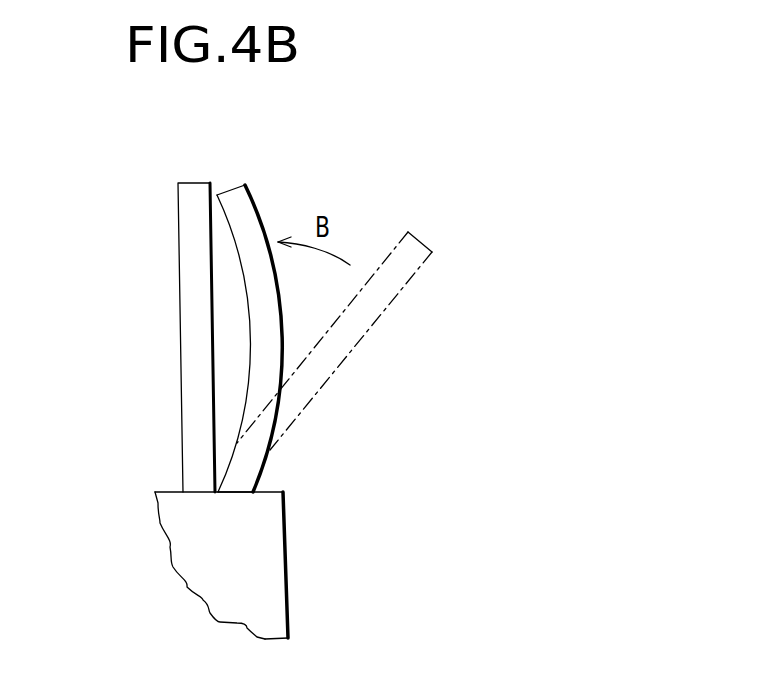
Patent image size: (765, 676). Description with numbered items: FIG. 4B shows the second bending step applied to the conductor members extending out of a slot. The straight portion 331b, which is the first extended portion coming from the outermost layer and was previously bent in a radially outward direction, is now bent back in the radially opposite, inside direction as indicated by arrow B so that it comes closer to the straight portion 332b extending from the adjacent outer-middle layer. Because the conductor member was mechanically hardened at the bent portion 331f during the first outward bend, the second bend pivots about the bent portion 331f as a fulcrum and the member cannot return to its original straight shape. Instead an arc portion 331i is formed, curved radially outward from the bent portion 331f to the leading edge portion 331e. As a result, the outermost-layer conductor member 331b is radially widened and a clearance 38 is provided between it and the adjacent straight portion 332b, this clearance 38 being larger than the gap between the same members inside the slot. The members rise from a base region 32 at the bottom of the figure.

The straight portion 332b is at (140, 334).
The clearance 38 is at (222, 423).
The straight portion 331b is at (374, 309).
The leading edge portion 331e is at (227, 185).
The arc portion 331i is at (268, 322).
The bent portion 331f is at (240, 477).
The base block 32 is at (268, 585).